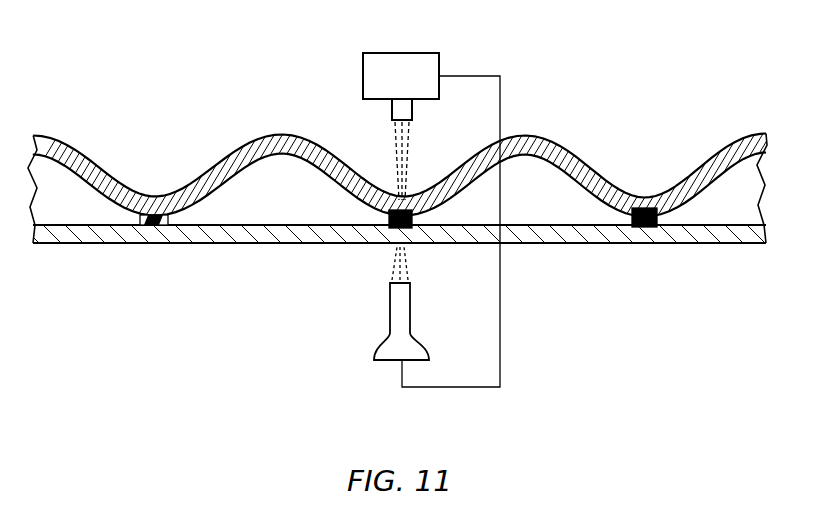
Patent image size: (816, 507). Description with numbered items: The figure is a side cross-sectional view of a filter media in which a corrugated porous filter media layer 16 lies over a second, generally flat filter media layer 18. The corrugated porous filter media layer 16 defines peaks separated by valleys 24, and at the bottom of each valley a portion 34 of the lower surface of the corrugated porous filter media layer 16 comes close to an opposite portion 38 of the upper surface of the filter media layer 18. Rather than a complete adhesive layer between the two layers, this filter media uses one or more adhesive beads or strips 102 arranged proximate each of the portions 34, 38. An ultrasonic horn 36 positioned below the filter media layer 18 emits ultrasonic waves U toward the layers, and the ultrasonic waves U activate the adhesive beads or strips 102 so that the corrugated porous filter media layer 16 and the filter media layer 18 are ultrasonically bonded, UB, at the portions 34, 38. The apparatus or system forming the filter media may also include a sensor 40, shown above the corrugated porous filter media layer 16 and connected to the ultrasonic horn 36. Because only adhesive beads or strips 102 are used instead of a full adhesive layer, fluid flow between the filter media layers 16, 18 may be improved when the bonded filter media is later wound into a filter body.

The corrugated porous filter media layer 16 is at (536, 133).
The filter media layer 18 is at (522, 237).
The valleys 24 is at (149, 211).
The portion of the lower surface of the corrugated porous filter media layer 34 is at (155, 196).
The ultrasonic horn 36 is at (378, 348).
The portion of the upper surface of the filter media layer 38 is at (156, 229).
The sensor 40 is at (432, 53).
The adhesive beads or strips 102 is at (150, 223).
The ultrasonic waves U is at (386, 265).
The ultrasonic bond UB is at (418, 220).